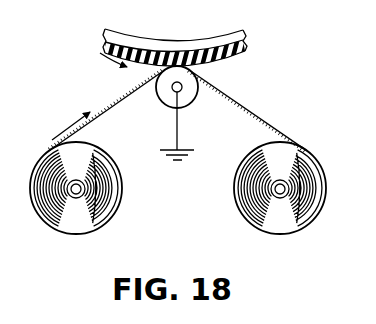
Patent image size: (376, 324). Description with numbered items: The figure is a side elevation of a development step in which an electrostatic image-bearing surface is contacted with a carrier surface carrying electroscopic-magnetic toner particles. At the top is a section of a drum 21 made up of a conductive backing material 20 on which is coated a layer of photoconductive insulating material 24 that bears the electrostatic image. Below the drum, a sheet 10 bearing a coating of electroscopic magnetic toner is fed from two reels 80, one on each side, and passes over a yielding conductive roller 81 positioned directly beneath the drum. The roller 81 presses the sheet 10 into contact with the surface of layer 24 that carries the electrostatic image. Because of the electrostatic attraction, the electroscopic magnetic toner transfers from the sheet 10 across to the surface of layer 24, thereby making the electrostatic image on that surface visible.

The sheet 10 is at (270, 118).
The conductive backing material 20 is at (244, 32).
The drum 21 is at (181, 33).
The photoconductive insulating material 24 is at (247, 47).
The reels 80 is at (122, 186).
The yielding conductive roller 81 is at (191, 99).